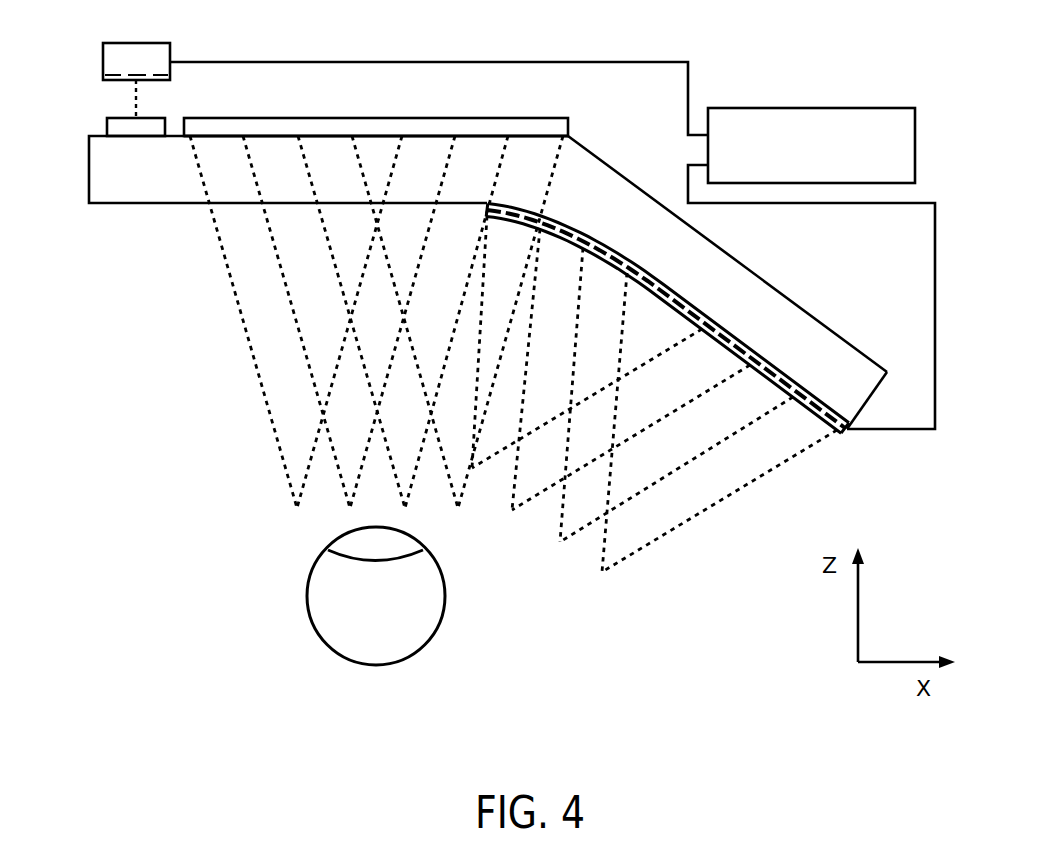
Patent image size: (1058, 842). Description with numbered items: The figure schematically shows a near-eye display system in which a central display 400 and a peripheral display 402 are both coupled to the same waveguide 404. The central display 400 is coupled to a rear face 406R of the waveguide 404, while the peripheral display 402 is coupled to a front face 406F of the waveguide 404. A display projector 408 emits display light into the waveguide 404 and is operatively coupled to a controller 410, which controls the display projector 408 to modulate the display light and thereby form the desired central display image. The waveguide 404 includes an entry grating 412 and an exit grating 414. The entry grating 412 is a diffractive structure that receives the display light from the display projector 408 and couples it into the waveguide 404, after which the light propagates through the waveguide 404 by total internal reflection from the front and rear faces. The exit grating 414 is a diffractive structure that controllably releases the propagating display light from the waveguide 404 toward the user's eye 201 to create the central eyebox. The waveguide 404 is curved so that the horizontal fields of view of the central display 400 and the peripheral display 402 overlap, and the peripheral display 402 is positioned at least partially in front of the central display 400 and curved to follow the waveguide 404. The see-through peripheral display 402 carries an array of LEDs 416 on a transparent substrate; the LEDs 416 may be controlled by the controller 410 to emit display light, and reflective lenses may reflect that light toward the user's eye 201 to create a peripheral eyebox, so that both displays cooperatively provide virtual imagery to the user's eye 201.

The user's eye 201 is at (308, 591).
The central display 400 is at (362, 88).
The peripheral display 402 is at (868, 443).
The waveguide 404 is at (766, 273).
The rear face 406R is at (283, 122).
The front face 406F is at (766, 345).
The display projector 408 is at (147, 43).
The controller 410 is at (903, 158).
The entry grating 412 is at (118, 118).
The exit grating 414 is at (507, 116).
The array of LEDs 416 is at (838, 428).